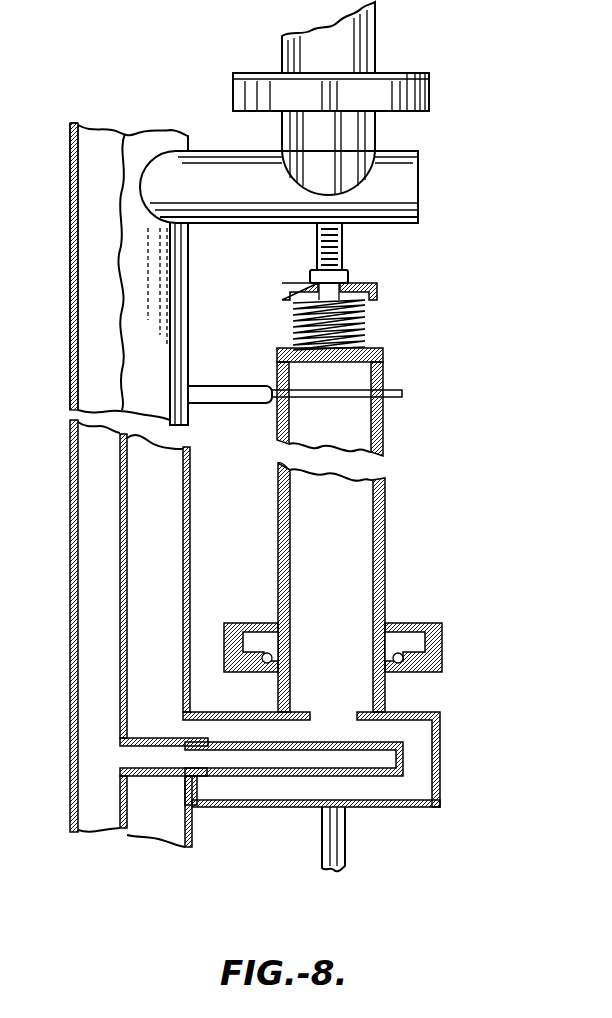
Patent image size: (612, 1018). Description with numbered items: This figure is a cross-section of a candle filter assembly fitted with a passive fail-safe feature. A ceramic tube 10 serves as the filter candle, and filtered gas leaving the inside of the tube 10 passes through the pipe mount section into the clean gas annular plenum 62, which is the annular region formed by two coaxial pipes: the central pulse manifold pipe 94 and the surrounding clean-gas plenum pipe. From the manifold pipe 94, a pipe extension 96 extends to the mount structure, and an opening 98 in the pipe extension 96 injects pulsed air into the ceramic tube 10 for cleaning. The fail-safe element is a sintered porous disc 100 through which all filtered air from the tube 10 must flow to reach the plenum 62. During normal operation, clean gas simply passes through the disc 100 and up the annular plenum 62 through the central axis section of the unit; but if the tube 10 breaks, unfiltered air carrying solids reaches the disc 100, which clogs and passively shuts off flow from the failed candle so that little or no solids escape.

The ceramic tube 10 is at (278, 533).
The clean gas annular plenum 62 is at (183, 561).
The central pulse manifold pipe 94 is at (120, 678).
The pipe extension 96 is at (370, 773).
The opening 98 is at (377, 742).
The sintered porous disc 100 is at (198, 795).